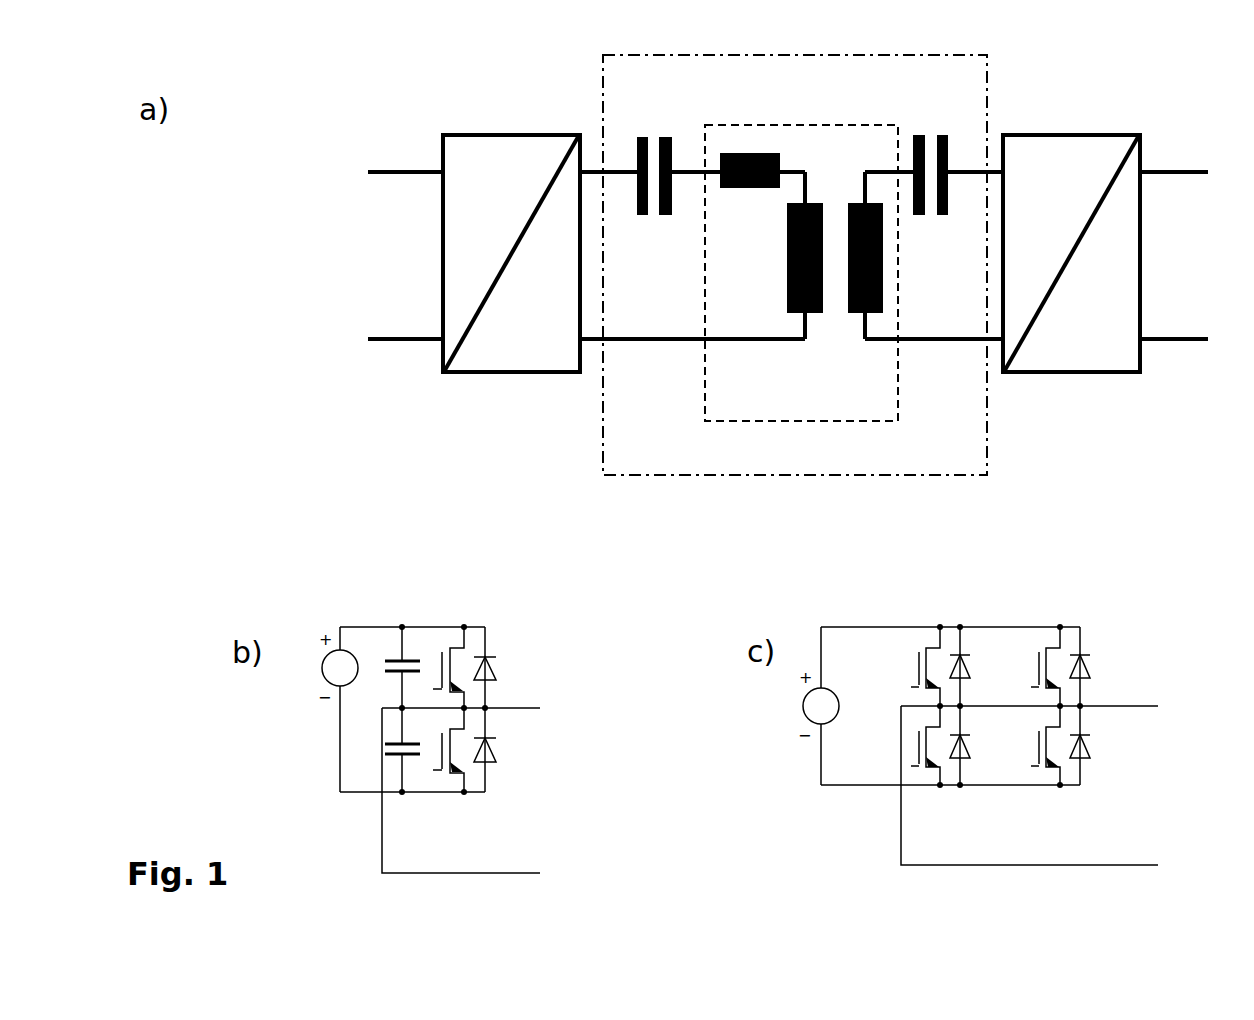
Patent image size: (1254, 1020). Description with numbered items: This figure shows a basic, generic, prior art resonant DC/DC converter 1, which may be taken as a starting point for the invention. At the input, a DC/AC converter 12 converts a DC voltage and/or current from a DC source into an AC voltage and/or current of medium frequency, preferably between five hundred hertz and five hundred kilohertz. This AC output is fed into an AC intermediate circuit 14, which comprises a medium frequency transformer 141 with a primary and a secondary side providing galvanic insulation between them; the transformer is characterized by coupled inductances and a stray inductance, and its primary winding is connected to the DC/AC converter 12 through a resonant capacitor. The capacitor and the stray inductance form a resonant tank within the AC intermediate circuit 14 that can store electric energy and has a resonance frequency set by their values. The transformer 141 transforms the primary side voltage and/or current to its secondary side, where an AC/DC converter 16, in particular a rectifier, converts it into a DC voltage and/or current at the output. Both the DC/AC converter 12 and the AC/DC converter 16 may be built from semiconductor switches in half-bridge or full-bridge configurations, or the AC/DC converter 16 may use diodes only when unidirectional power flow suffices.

The resonant DC/DC converter 1 is at (341, 378).
The DC/AC converter 12 is at (572, 364).
The AC intermediate circuit 14 is at (658, 463).
The transformer 141 is at (767, 415).
The AC/DC converter 16 is at (1125, 360).